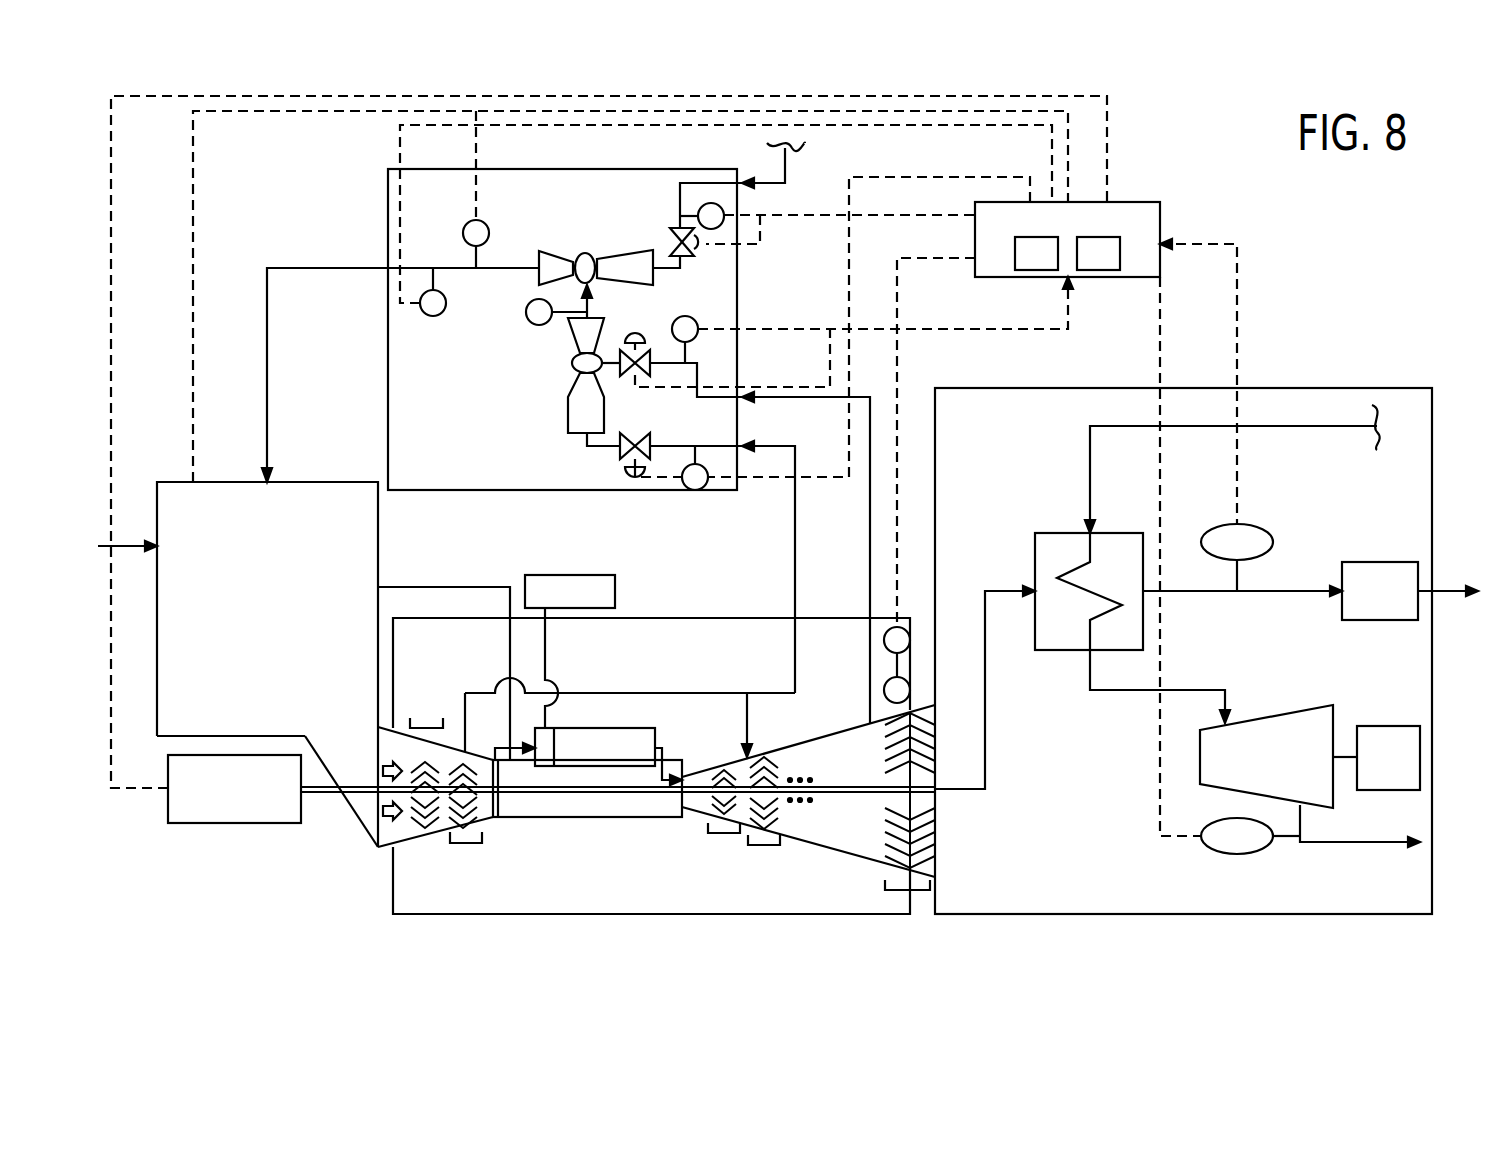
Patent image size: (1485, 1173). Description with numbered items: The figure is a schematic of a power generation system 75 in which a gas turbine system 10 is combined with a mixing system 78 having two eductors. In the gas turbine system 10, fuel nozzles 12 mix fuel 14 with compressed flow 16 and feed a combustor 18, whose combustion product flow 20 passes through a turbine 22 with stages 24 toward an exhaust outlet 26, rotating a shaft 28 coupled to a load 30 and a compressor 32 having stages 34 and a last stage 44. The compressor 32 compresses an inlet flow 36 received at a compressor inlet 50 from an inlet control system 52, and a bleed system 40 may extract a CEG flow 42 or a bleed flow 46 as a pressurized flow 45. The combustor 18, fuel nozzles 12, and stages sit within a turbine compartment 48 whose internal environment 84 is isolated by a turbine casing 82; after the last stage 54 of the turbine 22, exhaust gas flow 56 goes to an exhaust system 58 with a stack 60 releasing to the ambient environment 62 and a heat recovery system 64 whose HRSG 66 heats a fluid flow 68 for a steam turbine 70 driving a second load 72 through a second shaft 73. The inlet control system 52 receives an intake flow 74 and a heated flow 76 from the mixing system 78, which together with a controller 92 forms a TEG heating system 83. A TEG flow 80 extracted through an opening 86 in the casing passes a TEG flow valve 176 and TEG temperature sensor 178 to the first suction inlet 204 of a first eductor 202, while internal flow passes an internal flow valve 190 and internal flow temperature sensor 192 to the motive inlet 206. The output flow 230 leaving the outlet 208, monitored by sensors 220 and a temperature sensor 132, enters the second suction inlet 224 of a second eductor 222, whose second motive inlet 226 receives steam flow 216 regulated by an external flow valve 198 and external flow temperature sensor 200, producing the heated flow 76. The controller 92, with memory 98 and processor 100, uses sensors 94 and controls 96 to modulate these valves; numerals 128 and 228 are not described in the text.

The gas turbine system 10 is at (370, 928).
The fuel nozzles 12 is at (560, 728).
The fuel 14 is at (565, 575).
The compressed flow 16 is at (500, 750).
The combustor 18 is at (592, 728).
The combustion product flow 20 is at (660, 760).
The turbine 22 is at (820, 742).
The stages 24 is at (765, 845).
The exhaust outlet 26 is at (946, 802).
The shaft 28 is at (605, 790).
The load 30 is at (235, 825).
The compressor 32 is at (420, 830).
The stages 34 is at (430, 718).
The inlet flow 36 is at (383, 810).
The bleed system 40 is at (478, 655).
The compressor extraction gas (CEG) flow 42 is at (462, 725).
The last stage 44 is at (478, 845).
The pressurized flow 45 is at (420, 587).
The bleed flow 46 is at (510, 635).
The turbine compartment 48 is at (820, 915).
The compressor inlet 50 is at (380, 855).
The inlet control system 52 is at (155, 612).
The last stage 54 is at (915, 890).
The exhaust gas flow 56 is at (985, 745).
The exhaust system 58 is at (1300, 388).
The stack 60 is at (1378, 562).
The ambient environment 62 is at (1468, 561).
The heat recovery system 64 is at (1035, 484).
The heat recovery steam generator (HRSG) 66 is at (1035, 565).
The fluid flow 68 is at (1092, 448).
The steam turbine 70 is at (1298, 712).
The second load 72 is at (1390, 726).
The second shaft 73 is at (1344, 760).
The intake flow 74 is at (118, 545).
The power generation system 75 is at (1320, 230).
The heated flow 76 is at (267, 402).
The mixing system 78 is at (540, 169).
The turbine extraction gas (TEG) flow 80 is at (870, 672).
The turbine casing 82 is at (848, 856).
The turbine extraction gas (TEG) heating system 83 is at (305, 215).
The environment 84 is at (680, 673).
The opening 86 is at (855, 720).
The controller 92 is at (1160, 202).
The sensors 94 is at (906, 627).
The controls 96 is at (908, 680).
The memory 98 is at (1035, 270).
The processor 100 is at (1100, 270).
The flow sensor 128 is at (430, 316).
The temperature sensor 132 is at (488, 226).
The TEG flow valve 176 is at (627, 378).
The TEG temperature sensor 178 is at (698, 322).
The internal flow valve 190 is at (620, 462).
The internal flow temperature sensor 192 is at (700, 490).
The external flow valve 198 is at (672, 236).
The external flow temperature sensor 200 is at (711, 203).
The first eductor 202 is at (568, 405).
The first suction inlet 204 is at (620, 352).
The motive inlet 206 is at (582, 437).
The outlet 208 is at (568, 322).
The steam flow 216 is at (802, 174).
The sensors 220 is at (555, 310).
The second eductor 222 is at (640, 258).
The second suction inlet 224 is at (585, 283).
The second motive inlet 226 is at (737, 282).
The fan inlet 228 is at (545, 278).
The output flow 230 is at (590, 310).